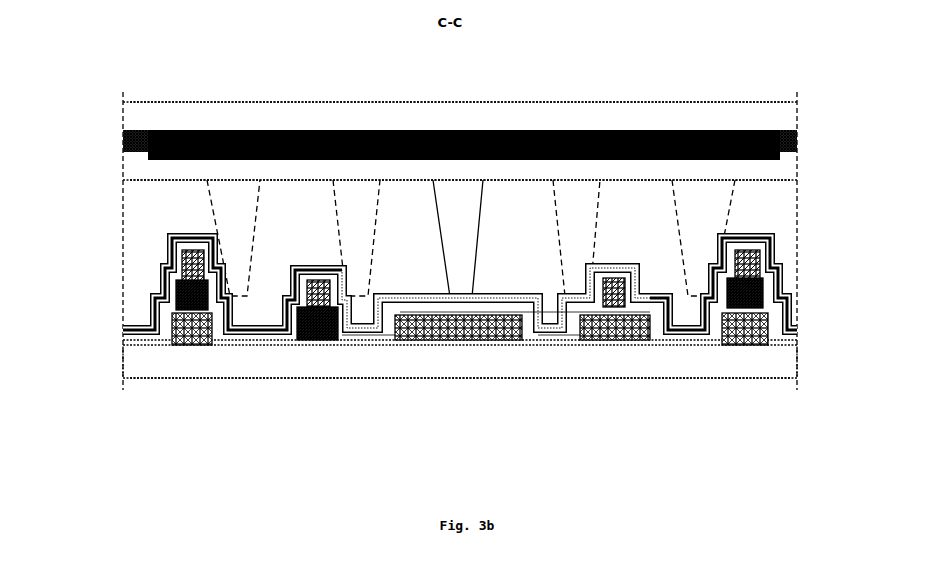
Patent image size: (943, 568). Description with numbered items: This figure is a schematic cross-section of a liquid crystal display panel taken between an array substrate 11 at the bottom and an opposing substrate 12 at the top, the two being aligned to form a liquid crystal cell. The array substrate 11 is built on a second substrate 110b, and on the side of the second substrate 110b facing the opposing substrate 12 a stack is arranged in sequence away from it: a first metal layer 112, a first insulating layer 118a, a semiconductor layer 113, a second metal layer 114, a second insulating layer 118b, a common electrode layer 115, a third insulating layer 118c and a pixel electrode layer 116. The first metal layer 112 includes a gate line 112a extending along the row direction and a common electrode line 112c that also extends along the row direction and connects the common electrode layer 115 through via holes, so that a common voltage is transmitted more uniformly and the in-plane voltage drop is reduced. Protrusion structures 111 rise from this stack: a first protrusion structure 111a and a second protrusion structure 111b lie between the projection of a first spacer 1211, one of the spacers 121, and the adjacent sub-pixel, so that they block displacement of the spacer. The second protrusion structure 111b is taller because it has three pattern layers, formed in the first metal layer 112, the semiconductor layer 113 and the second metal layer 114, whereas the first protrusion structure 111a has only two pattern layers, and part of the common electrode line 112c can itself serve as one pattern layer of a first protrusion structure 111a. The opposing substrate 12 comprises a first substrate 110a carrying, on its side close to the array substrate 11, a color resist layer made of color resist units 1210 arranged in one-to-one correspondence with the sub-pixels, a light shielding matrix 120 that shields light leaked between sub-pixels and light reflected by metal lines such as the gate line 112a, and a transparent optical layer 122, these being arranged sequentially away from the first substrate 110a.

The array substrate 11 is at (740, 392).
The opposing substrate 12 is at (727, 92).
The first substrate 110a is at (373, 108).
The second substrate 110b is at (685, 370).
The protrusion structures 111 is at (464, 259).
The first protrusion structure 111a is at (318, 264).
The second protrusion structure 111b is at (156, 263).
The first metal layer 112 is at (470, 387).
The gate line 112a is at (468, 341).
The common electrode line 112c is at (598, 341).
The semiconductor layer 113 is at (320, 342).
The second metal layer 114 is at (628, 342).
The common electrode layer 115 is at (797, 330).
The pixel electrode layer 116 is at (797, 320).
The first insulating layer 118a is at (385, 342).
The second insulating layer 118b is at (357, 342).
The third insulating layer 118c is at (545, 331).
The light shielding matrix 120 is at (147, 160).
The spacers 121 is at (425, 238).
The first spacer 1211 is at (438, 220).
The color resist units 1210 is at (793, 142).
The transparent optical layer 122 is at (795, 168).